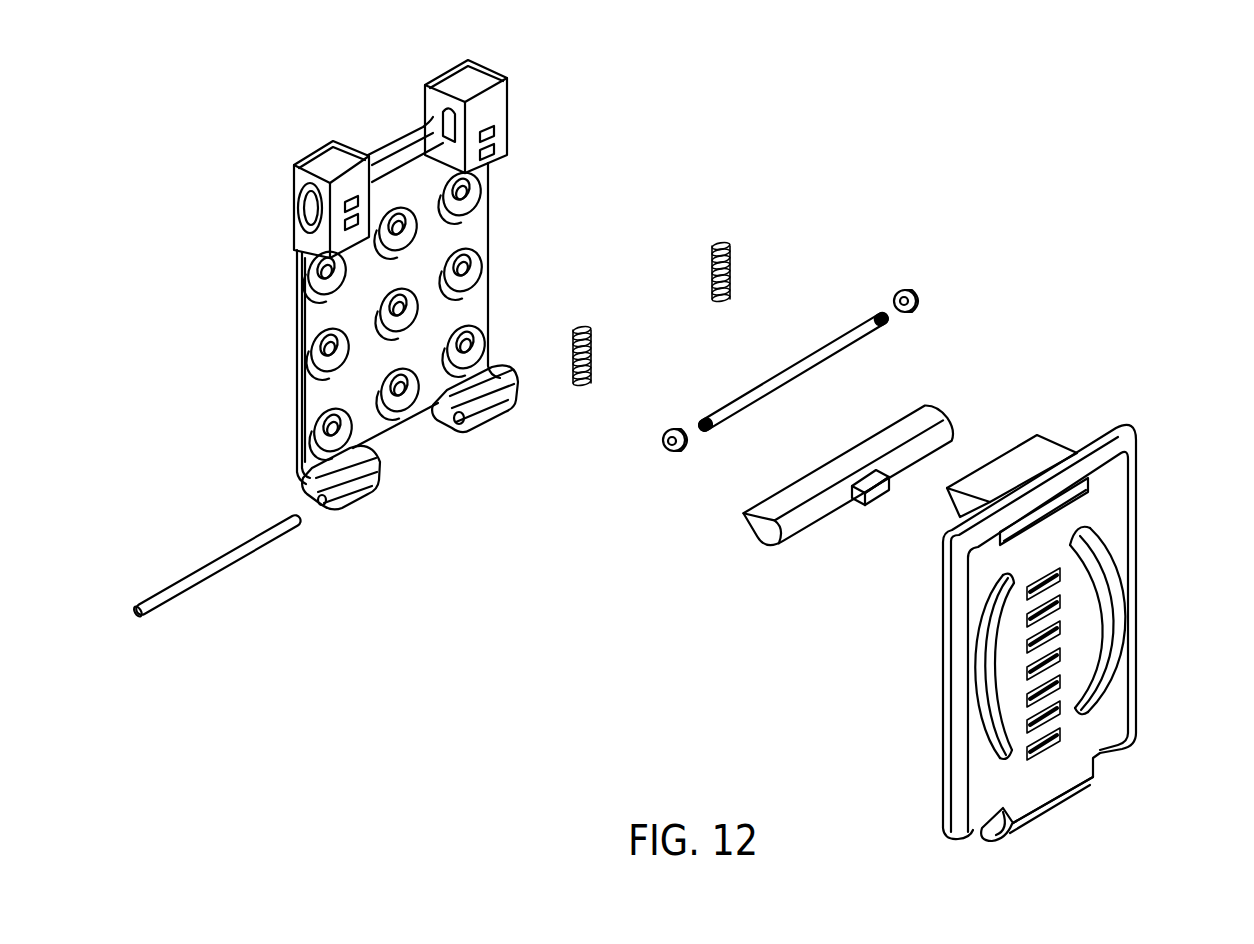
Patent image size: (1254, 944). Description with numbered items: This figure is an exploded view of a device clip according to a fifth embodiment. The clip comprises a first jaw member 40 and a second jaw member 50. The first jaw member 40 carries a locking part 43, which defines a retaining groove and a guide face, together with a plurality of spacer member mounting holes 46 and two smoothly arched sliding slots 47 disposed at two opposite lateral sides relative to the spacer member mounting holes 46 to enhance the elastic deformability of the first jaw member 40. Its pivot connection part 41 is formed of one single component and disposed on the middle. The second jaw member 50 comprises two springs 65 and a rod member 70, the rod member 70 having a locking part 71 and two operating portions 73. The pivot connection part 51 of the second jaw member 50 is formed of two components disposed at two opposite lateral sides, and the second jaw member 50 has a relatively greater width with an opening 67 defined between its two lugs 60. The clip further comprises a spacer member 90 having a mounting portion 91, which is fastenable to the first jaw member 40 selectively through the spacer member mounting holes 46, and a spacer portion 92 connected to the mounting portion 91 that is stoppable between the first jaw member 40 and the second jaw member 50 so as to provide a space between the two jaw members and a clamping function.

The first jaw member 40 is at (1033, 602).
The pivot connection part 41 is at (1085, 784).
The locking part 43 is at (1020, 440).
The spacer member mounting holes 46 is at (1058, 580).
The sliding slots 47 is at (1093, 555).
The second jaw member 50 is at (282, 325).
The pivot connection part 51 is at (345, 505).
The lugs 60 is at (305, 170).
The springs 65 is at (582, 318).
The opening 67 is at (388, 132).
The rod member 70 is at (876, 260).
The locking part 71 is at (823, 347).
The operating portions 73 is at (924, 305).
The spacer member 90 is at (834, 512).
The mounting portion 91 is at (880, 492).
The spacer portion 92 is at (812, 483).